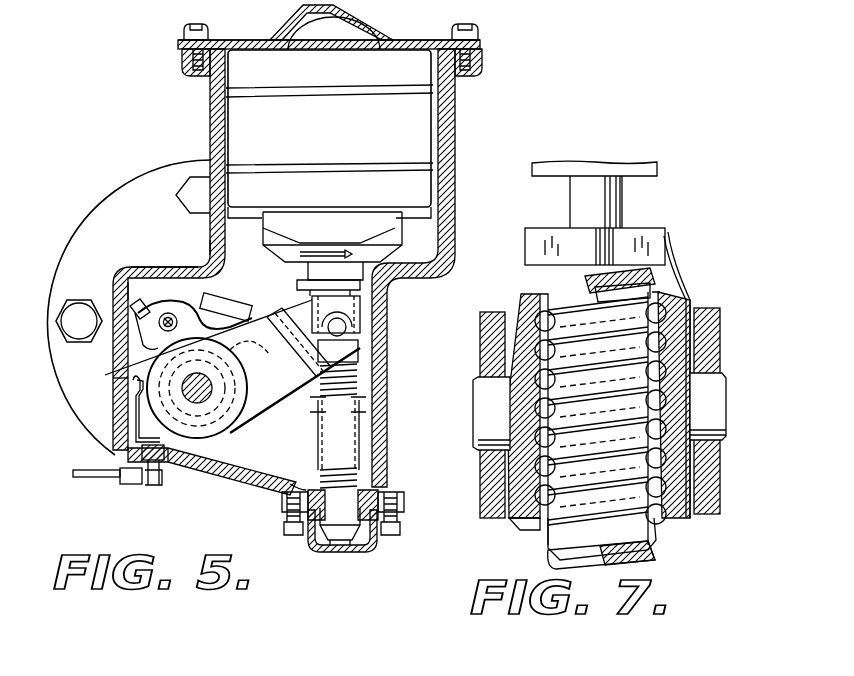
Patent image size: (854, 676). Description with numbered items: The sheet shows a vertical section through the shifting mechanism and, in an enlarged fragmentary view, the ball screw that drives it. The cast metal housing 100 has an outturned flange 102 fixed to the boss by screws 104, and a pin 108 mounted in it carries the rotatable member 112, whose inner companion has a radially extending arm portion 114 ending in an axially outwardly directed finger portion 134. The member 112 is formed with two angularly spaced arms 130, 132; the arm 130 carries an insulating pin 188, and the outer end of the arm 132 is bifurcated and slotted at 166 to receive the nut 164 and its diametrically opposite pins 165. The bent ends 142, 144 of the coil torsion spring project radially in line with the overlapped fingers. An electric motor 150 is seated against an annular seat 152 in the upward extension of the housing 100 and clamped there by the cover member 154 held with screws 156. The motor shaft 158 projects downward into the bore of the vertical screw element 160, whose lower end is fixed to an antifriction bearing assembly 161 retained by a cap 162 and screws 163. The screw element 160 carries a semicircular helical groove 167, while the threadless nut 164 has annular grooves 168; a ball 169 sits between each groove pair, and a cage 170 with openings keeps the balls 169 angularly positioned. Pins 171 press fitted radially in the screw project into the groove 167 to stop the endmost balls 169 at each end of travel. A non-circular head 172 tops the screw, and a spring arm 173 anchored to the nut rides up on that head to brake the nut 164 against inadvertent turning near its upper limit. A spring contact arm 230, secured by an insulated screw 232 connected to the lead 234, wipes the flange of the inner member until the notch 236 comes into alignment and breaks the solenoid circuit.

In FIG. 5, the housing 100 is at (130, 263).
In FIG. 5, the outturned flange 102 is at (58, 392).
In FIG. 5, the screws 104 is at (66, 319).
In FIG. 5, the pin 108 is at (230, 428).
In FIG. 5, the member 112 is at (193, 470).
In FIG. 5, the arm portion 114 is at (218, 312).
In FIG. 5, the arm 130 is at (192, 304).
In FIG. 5, the arm 132 is at (272, 318).
In FIG. 7, the arm 132 is at (497, 489).
In FIG. 5, the finger portion 134 is at (210, 266).
In FIG. 5, the spring end 142 is at (150, 330).
In FIG. 5, the spring end 144 is at (263, 302).
In FIG. 5, the electric motor 150 is at (340, 135).
In FIG. 7, the electric motor 150 is at (660, 170).
In FIG. 5, the annular seat 152 is at (437, 192).
In FIG. 5, the cover member 154 is at (396, 40).
In FIG. 5, the screws 156 is at (190, 27).
In FIG. 7, the shaft 158 is at (624, 207).
In FIG. 5, the screw element 160 is at (358, 386).
In FIG. 7, the screw element 160 is at (656, 548).
In FIG. 5, the antifriction bearing assembly 161 is at (386, 484).
In FIG. 5, the cap 162 is at (355, 553).
In FIG. 5, the screws 163 is at (392, 526).
In FIG. 5, the nut 164 is at (362, 300).
In FIG. 7, the nut 164 is at (522, 298).
In FIG. 5, the pins 165 is at (352, 326).
In FIG. 7, the pins 165 is at (486, 402).
In FIG. 5, the slots 166 is at (358, 350).
In FIG. 7, the helical groove 167 is at (548, 550).
In FIG. 7, the annular grooves 168 is at (520, 516).
In FIG. 7, the balls 169 is at (662, 312).
In FIG. 7, the cage 170 is at (706, 471).
In FIG. 7, the pins 171 is at (652, 284).
In FIG. 5, the non-circular head 172 is at (378, 262).
In FIG. 7, the non-circular head 172 is at (650, 237).
In FIG. 5, the spring arm 173 is at (360, 285).
In FIG. 7, the spring arm 173 is at (648, 270).
In FIG. 5, the pin 188 is at (128, 298).
In FIG. 5, the spring contact arm 230 is at (130, 420).
In FIG. 5, the screw 232 is at (153, 487).
In FIG. 5, the lead 234 is at (90, 475).
In FIG. 5, the notch 236 is at (124, 383).